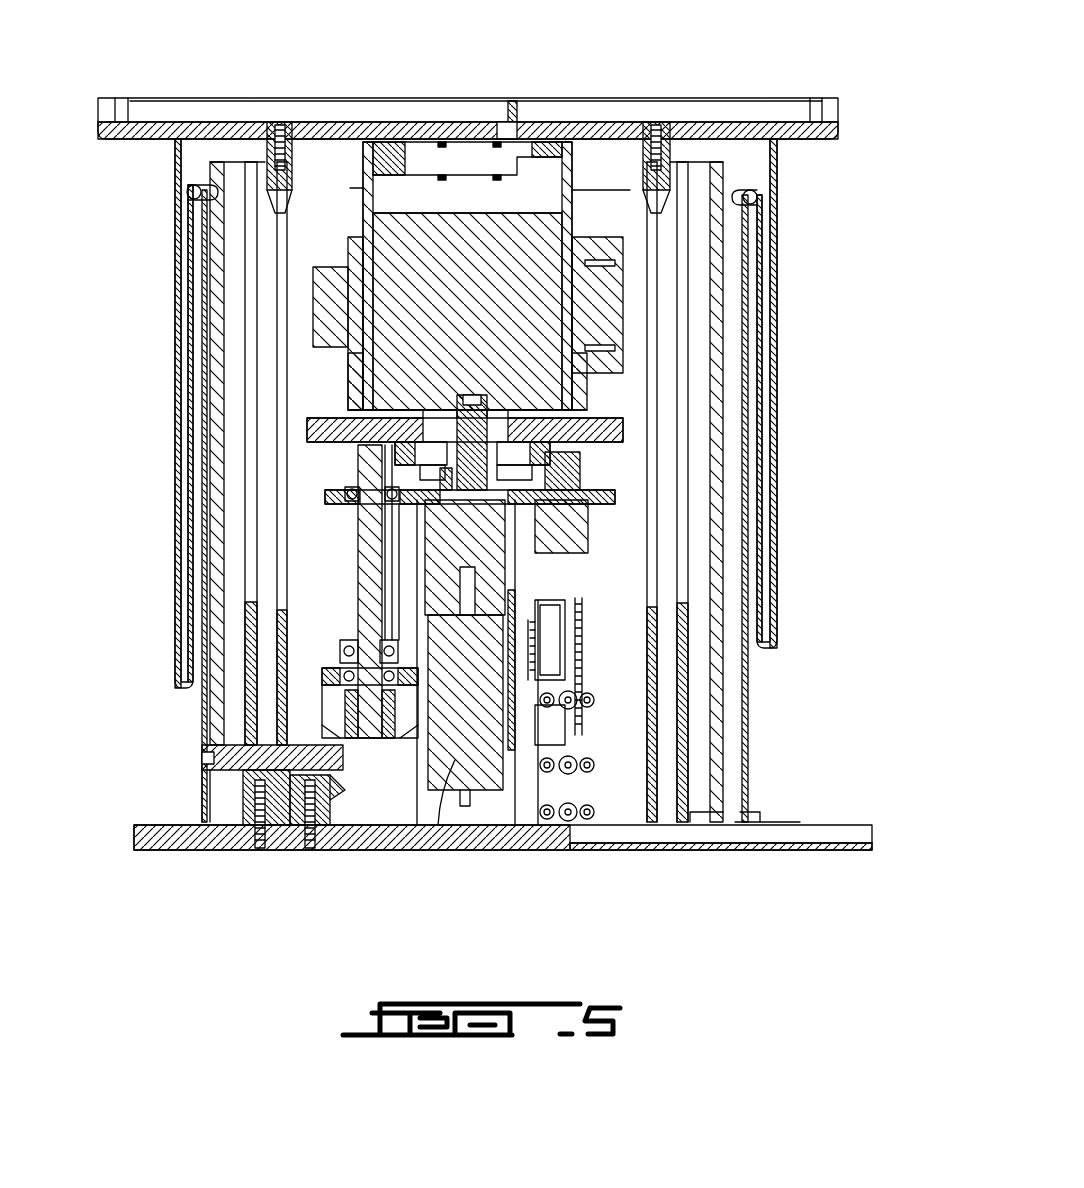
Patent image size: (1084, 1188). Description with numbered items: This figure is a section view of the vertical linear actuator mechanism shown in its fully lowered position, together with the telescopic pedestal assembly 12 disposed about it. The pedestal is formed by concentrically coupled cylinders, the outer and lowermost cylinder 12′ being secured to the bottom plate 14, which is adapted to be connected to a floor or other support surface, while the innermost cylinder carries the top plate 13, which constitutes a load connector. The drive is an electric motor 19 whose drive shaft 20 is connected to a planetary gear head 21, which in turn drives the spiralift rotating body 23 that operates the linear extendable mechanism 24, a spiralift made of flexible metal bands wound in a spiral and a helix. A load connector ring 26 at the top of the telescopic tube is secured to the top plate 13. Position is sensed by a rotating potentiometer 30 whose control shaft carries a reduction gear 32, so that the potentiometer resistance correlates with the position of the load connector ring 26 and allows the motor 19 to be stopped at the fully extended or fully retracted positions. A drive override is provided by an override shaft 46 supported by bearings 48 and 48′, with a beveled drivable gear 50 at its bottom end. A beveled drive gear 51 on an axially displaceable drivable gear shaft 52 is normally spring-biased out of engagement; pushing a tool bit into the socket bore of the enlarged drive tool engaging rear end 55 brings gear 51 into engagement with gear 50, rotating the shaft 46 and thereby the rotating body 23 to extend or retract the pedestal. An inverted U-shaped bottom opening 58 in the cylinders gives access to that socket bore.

The telescopic pedestal assembly 12 is at (785, 553).
The outer cylinder 12′ is at (215, 347).
The top plate 13 is at (792, 122).
The bottom plate 14 is at (832, 835).
The electric motor 19 is at (438, 825).
The drive shaft 20 is at (520, 605).
The planetary gear head 21 is at (490, 560).
The spiralift rotating body 23 is at (570, 410).
The linear extendable mechanism 24 is at (452, 295).
The load connector ring 26 is at (545, 150).
The position control rotating potentiometer 30 is at (565, 528).
The reduction gear 32 is at (605, 478).
The override shaft 46 is at (360, 605).
The bearing 48 is at (350, 505).
The bearing 48′ is at (340, 670).
The beveled drivable gear 50 is at (398, 740).
The beveled drive gear 51 is at (300, 795).
The drivable gear shaft 52 is at (262, 850).
The drive tool engaging rear end 55 is at (205, 752).
The inverted U-shaped bottom opening 58 is at (200, 798).